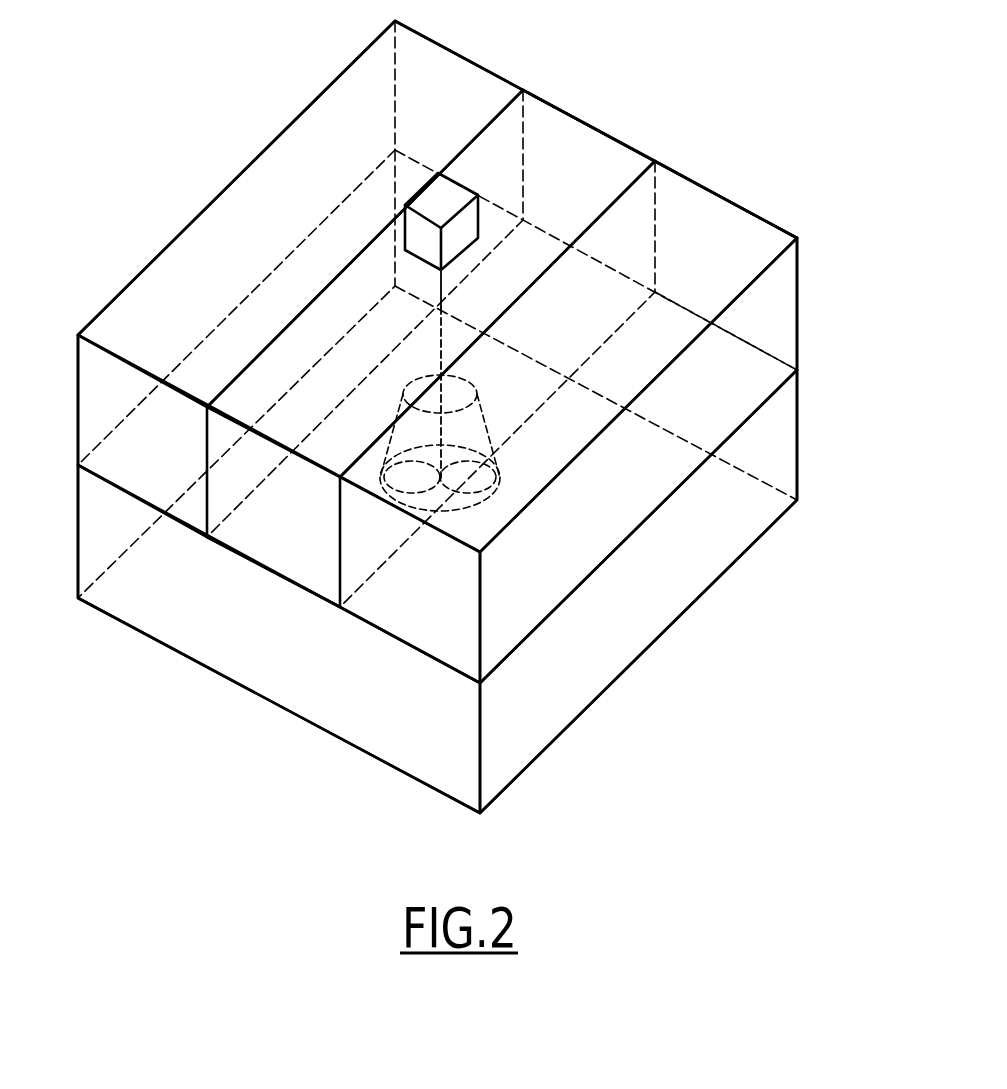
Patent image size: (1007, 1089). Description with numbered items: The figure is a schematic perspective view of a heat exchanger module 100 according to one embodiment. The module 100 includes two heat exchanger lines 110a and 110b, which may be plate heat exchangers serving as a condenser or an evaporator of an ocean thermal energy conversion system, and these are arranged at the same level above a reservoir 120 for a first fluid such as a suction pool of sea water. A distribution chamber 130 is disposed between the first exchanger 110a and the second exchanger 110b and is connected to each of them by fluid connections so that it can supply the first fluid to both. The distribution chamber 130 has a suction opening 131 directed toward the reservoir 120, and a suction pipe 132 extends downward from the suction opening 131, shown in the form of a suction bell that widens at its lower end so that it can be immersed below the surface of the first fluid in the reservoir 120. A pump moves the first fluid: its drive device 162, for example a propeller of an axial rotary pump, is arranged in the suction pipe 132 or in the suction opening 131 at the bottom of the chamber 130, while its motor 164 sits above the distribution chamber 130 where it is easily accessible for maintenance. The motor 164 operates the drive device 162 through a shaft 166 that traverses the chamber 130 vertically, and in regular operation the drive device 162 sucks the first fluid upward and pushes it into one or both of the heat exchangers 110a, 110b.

The heat exchanger module 100 is at (742, 90).
The first heat exchanger line 110a is at (245, 223).
The second heat exchanger line 110b is at (715, 257).
The fluid reservoir 120 is at (288, 670).
The distribution chamber 130 is at (572, 163).
The suction opening 131 is at (462, 392).
The suction pipe 132 is at (388, 447).
The drive device 162 is at (490, 487).
The motor 164 is at (443, 193).
The shaft 166 is at (437, 347).